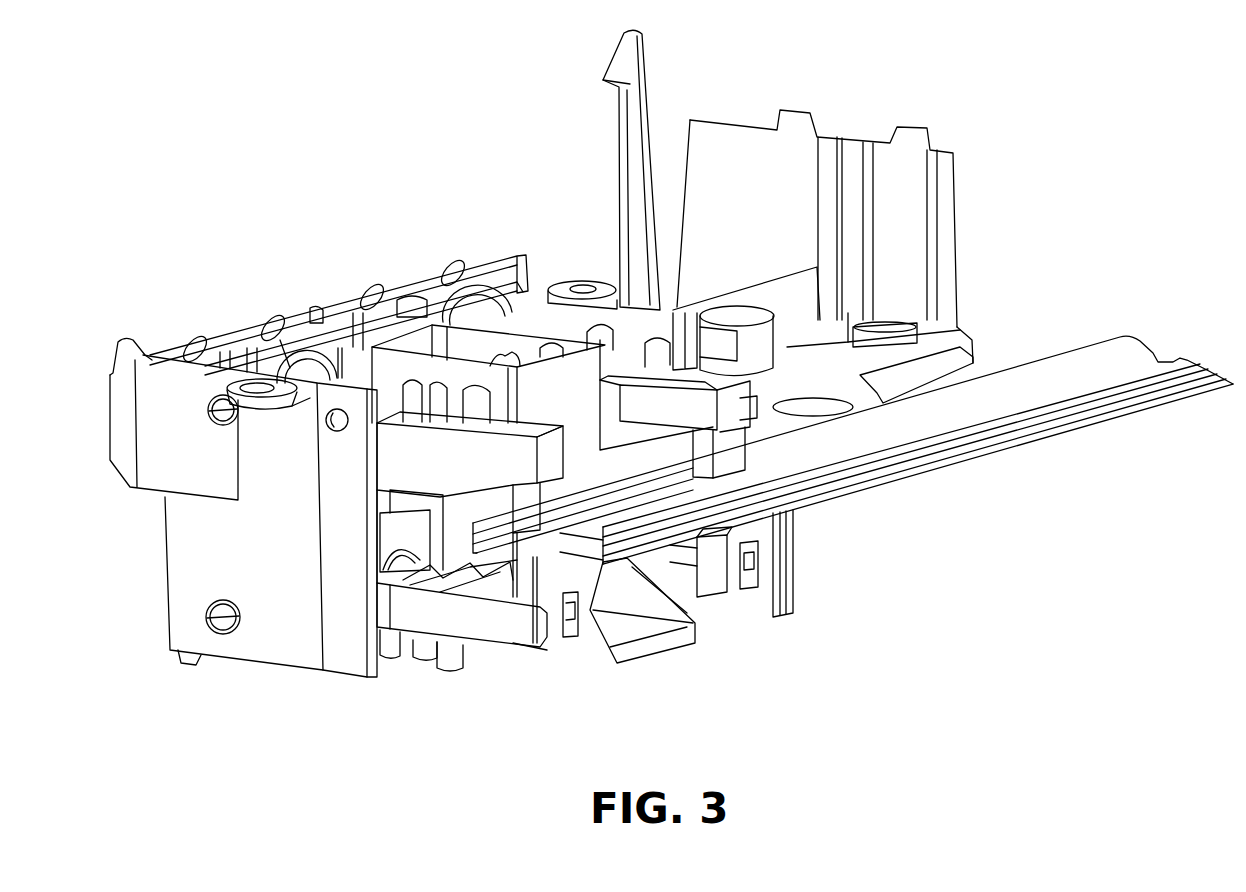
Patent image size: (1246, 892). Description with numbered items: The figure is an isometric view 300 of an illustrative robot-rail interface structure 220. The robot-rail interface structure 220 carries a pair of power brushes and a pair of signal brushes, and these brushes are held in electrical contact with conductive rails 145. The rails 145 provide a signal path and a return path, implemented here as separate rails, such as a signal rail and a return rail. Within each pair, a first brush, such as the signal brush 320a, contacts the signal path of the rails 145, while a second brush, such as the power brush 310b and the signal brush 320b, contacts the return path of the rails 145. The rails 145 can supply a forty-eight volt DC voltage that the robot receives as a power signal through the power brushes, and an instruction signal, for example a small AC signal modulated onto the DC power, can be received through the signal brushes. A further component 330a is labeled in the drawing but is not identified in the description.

The isometric view 300 is at (1016, 78).
The robot-rail interface structure 220 is at (350, 305).
The rails 145 is at (912, 477).
The signal brush 320a is at (547, 514).
The signal brush 320b is at (730, 580).
The brush holder 330a is at (733, 461).
The power brush 310b is at (553, 632).